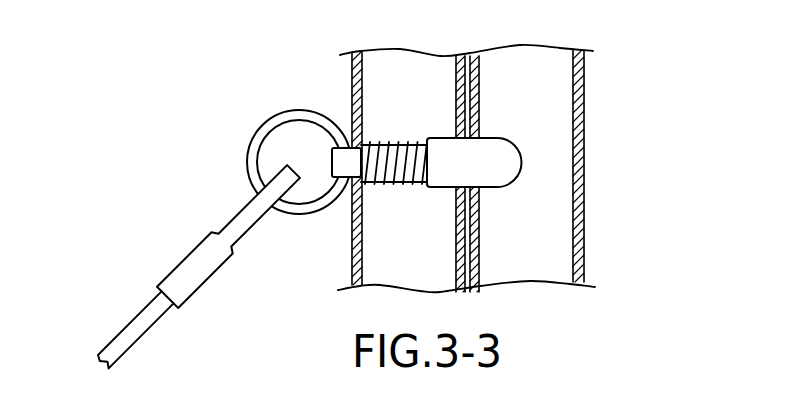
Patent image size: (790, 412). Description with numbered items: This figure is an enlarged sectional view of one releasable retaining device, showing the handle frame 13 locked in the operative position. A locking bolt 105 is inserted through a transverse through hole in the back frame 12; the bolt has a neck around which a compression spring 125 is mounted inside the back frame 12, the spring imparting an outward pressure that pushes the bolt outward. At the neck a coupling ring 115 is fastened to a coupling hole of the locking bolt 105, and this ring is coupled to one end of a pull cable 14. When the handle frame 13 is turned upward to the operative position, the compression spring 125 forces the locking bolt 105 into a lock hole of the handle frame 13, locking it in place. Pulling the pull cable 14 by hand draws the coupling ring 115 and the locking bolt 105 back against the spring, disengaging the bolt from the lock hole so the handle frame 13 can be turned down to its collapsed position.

The back frame 12 is at (350, 82).
The handle frame 13 is at (584, 128).
The coupling ring 115 is at (258, 143).
The pull cable 14 is at (142, 323).
The compression spring 125 is at (390, 142).
The locking bolt 105 is at (510, 150).